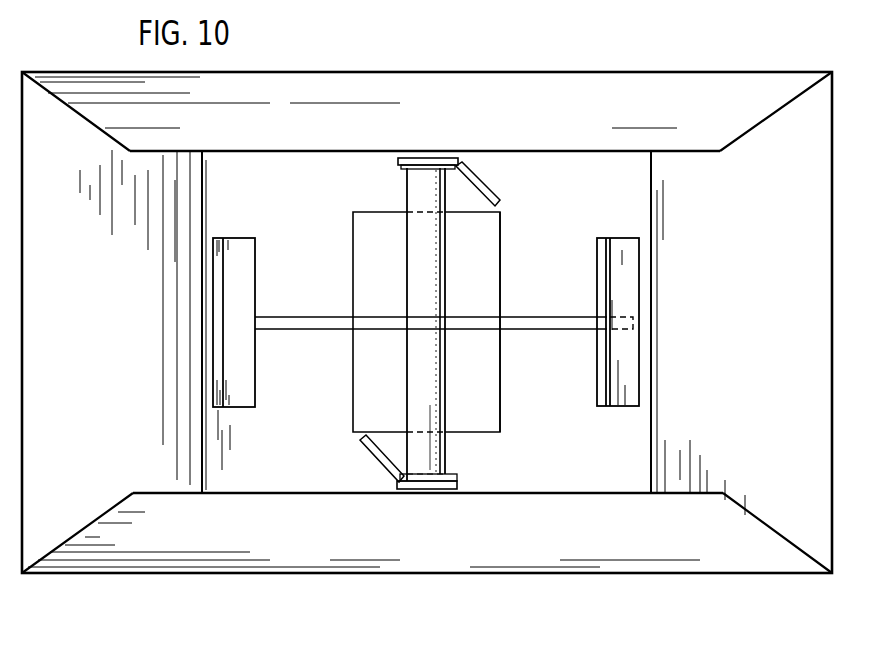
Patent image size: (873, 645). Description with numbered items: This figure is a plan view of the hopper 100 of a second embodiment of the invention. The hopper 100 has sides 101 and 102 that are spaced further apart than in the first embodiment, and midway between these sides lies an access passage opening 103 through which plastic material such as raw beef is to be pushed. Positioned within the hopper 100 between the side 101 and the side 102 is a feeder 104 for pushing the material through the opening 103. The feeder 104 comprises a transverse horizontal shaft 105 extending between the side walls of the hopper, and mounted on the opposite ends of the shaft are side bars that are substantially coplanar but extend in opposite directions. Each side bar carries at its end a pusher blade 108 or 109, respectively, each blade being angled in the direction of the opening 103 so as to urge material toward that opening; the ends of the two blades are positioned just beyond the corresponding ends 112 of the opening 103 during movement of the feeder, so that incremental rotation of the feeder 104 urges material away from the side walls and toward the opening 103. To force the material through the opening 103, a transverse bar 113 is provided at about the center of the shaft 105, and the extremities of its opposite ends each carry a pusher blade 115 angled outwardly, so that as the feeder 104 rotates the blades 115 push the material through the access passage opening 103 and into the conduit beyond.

The hopper 100 is at (764, 573).
The side 101 is at (558, 156).
The side 102 is at (535, 492).
The access passage opening 103 is at (498, 275).
The feeder 104 is at (407, 380).
The transverse horizontal shaft 105 is at (430, 287).
The pusher blade 108 is at (487, 188).
The pusher blade 109 is at (372, 462).
The ends of the opening 112 is at (396, 214).
The transverse bar 113 is at (527, 318).
The pusher blade 115 is at (247, 238).